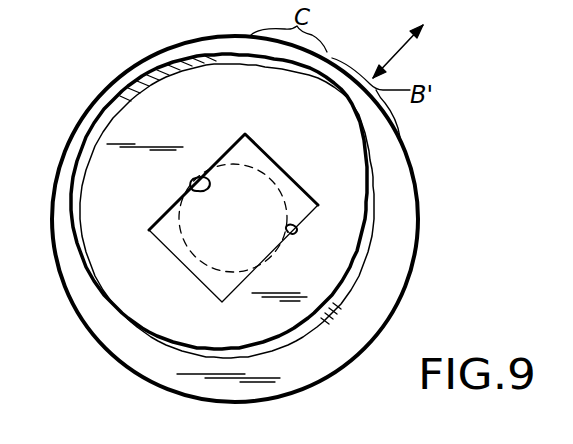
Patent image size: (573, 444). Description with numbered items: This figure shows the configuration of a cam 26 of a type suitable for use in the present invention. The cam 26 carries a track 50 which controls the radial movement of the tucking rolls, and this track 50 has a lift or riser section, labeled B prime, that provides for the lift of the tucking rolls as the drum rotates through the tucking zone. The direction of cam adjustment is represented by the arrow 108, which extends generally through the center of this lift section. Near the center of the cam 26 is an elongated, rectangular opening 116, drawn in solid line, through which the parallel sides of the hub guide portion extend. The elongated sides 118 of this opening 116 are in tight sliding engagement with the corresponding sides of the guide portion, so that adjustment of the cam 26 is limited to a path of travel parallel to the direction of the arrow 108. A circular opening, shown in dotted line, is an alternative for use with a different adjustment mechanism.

The cam 26 is at (406, 257).
The track 50 is at (375, 190).
The arrow 108 is at (402, 48).
The elongated opening 116 is at (301, 184).
The elongated sides 118 is at (193, 179).